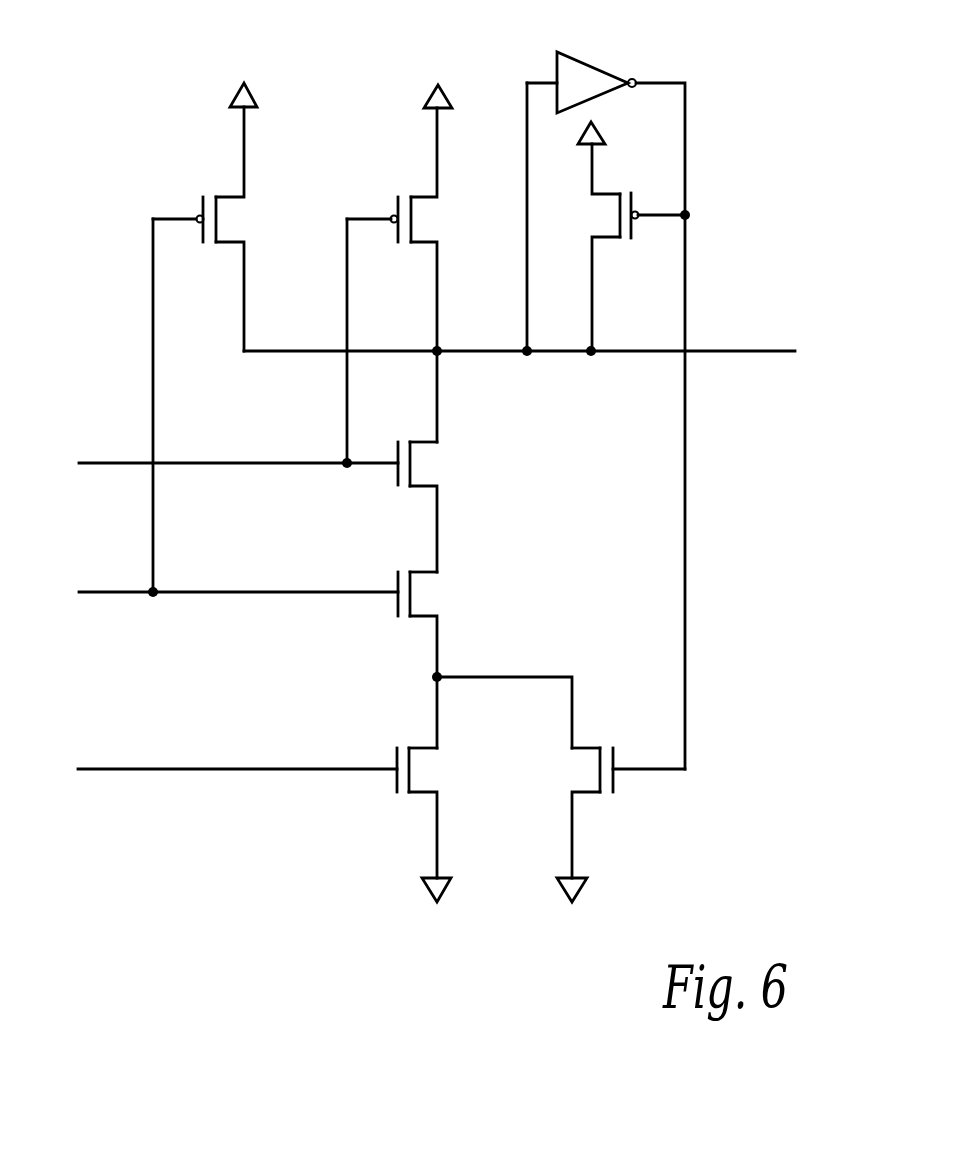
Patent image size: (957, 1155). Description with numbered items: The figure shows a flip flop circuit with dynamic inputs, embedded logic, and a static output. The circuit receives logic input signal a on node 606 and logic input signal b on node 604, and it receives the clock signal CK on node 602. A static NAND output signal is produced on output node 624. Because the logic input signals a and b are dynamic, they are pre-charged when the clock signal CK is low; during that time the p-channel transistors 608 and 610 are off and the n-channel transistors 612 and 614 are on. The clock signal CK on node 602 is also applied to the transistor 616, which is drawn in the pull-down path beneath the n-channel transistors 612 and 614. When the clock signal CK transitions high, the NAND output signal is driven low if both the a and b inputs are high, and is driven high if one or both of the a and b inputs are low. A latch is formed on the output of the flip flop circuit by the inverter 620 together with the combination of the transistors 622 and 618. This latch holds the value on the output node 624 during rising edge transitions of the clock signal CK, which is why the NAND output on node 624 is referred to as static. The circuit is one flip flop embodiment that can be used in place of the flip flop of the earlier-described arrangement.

The node 602 is at (108, 770).
The node 604 is at (93, 591).
The node 606 is at (93, 462).
The p-channel transistor 608 is at (218, 222).
The p-channel transistor 610 is at (413, 222).
The n-channel transistor 612 is at (445, 466).
The n-channel transistor 614 is at (445, 597).
The NMOS transistor 616 is at (412, 772).
The transistor 618 is at (600, 780).
The inverter 620 is at (592, 63).
The transistor 622 is at (614, 222).
The output node 624 is at (751, 351).